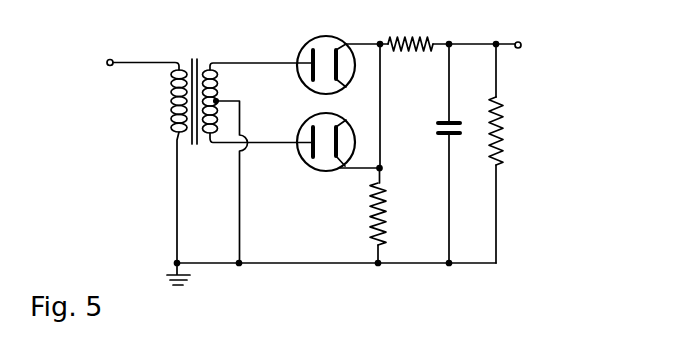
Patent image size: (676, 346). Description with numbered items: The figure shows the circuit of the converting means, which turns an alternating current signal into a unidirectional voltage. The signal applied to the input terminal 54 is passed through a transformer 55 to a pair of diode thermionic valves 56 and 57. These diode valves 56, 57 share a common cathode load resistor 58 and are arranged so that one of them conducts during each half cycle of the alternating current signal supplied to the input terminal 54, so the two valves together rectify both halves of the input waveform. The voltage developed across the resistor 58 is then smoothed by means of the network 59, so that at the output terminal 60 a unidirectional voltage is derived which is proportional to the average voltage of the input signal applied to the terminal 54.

The input terminal 54 is at (111, 60).
The transformer 55 is at (195, 58).
The diode thermionic valve 56 is at (305, 43).
The diode thermionic valve 57 is at (323, 172).
The common cathode load resistor 58 is at (391, 215).
The smoothing network 59 is at (480, 210).
The output terminal 60 is at (514, 38).